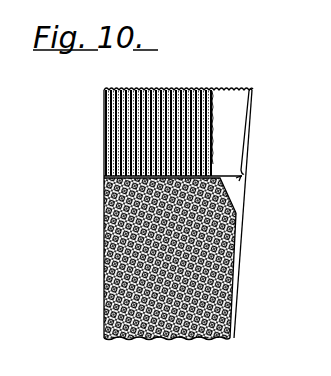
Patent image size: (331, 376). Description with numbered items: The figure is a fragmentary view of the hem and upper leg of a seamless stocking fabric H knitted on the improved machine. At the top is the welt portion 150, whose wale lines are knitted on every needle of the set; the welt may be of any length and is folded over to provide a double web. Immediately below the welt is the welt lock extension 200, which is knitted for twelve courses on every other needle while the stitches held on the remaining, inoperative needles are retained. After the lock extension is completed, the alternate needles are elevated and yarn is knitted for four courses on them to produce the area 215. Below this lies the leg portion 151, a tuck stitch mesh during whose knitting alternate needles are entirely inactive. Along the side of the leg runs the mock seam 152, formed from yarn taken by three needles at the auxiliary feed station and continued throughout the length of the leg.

The welt portion 150 is at (113, 110).
The leg portion 151 is at (96, 272).
The mock seam 152 is at (228, 285).
The welt lock extension 200 is at (232, 173).
The area knitted on alternate needles 215 is at (98, 170).
The fabric H is at (154, 342).